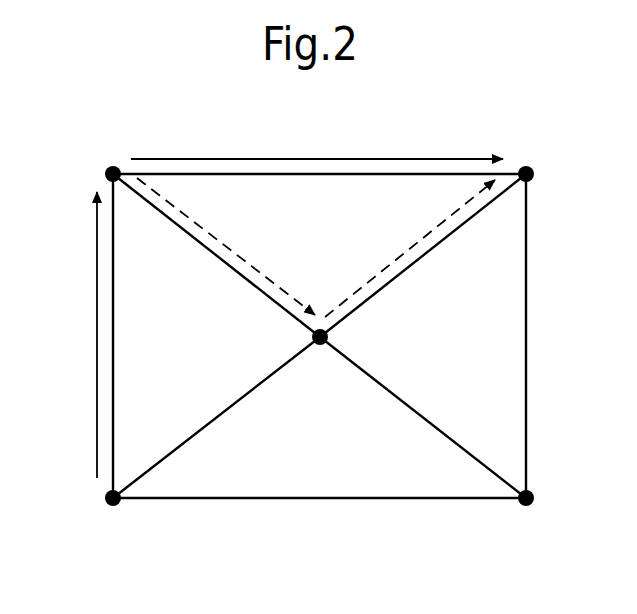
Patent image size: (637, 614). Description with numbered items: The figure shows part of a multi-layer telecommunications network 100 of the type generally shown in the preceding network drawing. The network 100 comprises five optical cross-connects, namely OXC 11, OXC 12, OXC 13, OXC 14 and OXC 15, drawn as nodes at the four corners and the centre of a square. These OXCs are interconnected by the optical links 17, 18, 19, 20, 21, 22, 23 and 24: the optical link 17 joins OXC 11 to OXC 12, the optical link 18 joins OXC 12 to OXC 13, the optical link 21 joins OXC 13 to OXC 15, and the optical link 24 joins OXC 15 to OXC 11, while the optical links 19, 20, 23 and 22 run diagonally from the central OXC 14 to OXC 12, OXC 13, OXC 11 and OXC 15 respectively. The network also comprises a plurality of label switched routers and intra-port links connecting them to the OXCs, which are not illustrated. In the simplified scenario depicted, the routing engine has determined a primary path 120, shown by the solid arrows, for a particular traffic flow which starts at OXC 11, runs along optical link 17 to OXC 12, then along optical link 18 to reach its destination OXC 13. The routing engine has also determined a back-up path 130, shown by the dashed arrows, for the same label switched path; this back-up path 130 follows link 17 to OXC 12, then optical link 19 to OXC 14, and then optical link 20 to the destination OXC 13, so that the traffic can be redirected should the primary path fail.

The multi-layer network 100 is at (446, 110).
The OXC 11 is at (111, 504).
The OXC 12 is at (107, 171).
The OXC 13 is at (531, 170).
The OXC 14 is at (326, 334).
The OXC 15 is at (527, 504).
The optical link 17 is at (115, 388).
The optical link 18 is at (340, 177).
The optical link 19 is at (228, 264).
The optical link 20 is at (421, 259).
The optical link 21 is at (528, 305).
The optical link 22 is at (418, 408).
The optical link 23 is at (241, 401).
The optical link 24 is at (376, 500).
The primary path 120 is at (262, 157).
The back-up path 130 is at (184, 213).